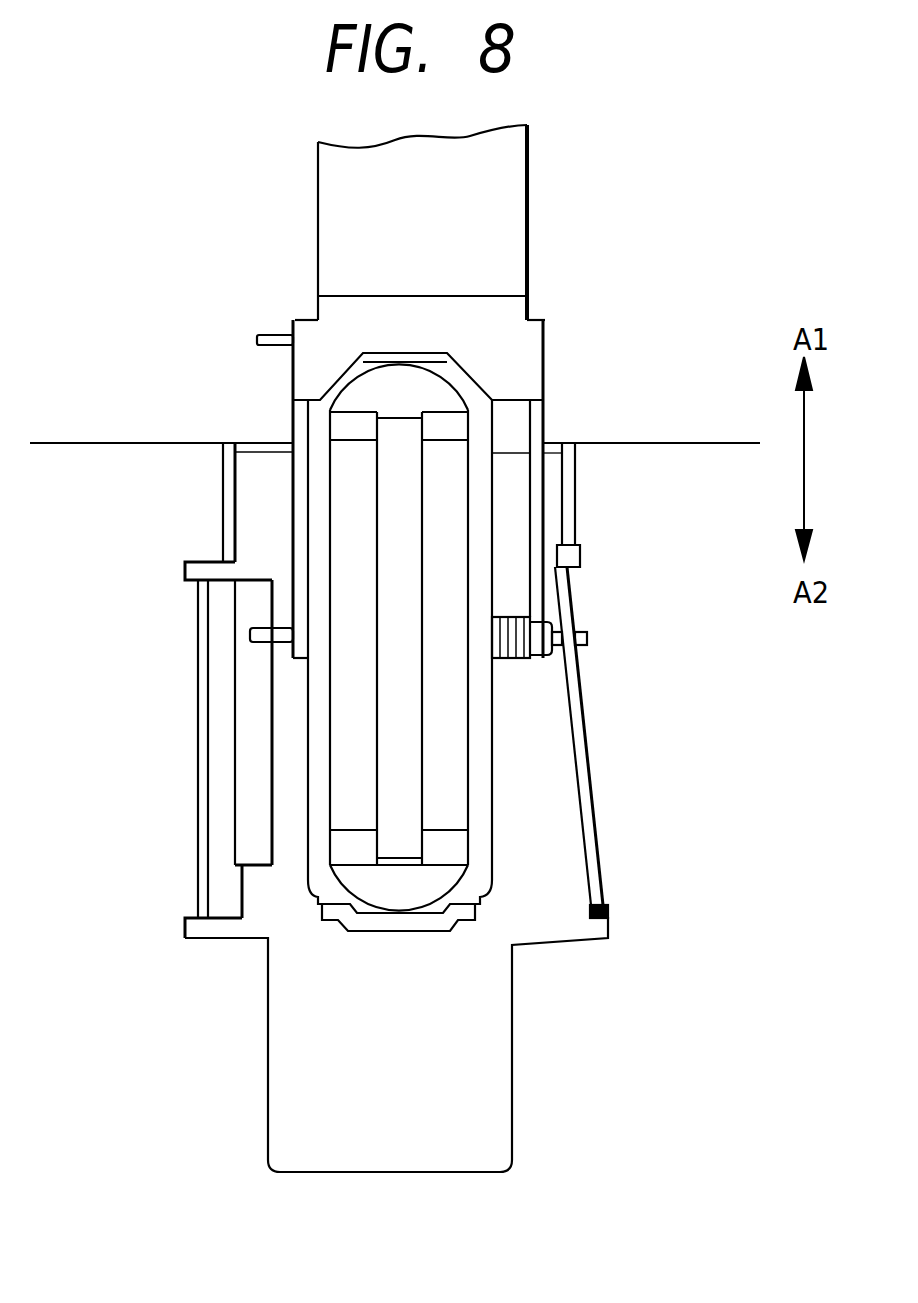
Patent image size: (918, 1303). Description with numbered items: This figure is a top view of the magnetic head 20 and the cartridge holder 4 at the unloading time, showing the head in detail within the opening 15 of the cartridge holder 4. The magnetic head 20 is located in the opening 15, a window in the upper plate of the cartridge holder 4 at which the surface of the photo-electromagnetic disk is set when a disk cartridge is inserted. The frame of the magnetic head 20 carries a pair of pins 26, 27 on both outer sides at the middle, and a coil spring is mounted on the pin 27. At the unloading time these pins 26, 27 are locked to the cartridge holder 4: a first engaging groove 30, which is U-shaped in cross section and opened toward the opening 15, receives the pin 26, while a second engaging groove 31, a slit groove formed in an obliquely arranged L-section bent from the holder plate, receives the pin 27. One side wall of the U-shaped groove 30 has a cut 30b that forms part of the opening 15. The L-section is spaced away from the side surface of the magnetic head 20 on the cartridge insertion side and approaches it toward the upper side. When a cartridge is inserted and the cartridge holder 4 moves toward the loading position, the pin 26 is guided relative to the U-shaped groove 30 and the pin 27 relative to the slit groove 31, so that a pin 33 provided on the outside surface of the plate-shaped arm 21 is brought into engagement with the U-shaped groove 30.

The cartridge holder 4 is at (680, 521).
The opening 15 is at (487, 1098).
The magnetic head 20 is at (552, 842).
The plate-shaped arm 21 is at (507, 243).
The pin 26 is at (250, 633).
The pin 27 is at (565, 632).
The first engaging groove 30 is at (252, 762).
The cut 30b is at (260, 895).
The second engaging groove 31 is at (592, 771).
The pin 33 is at (277, 334).